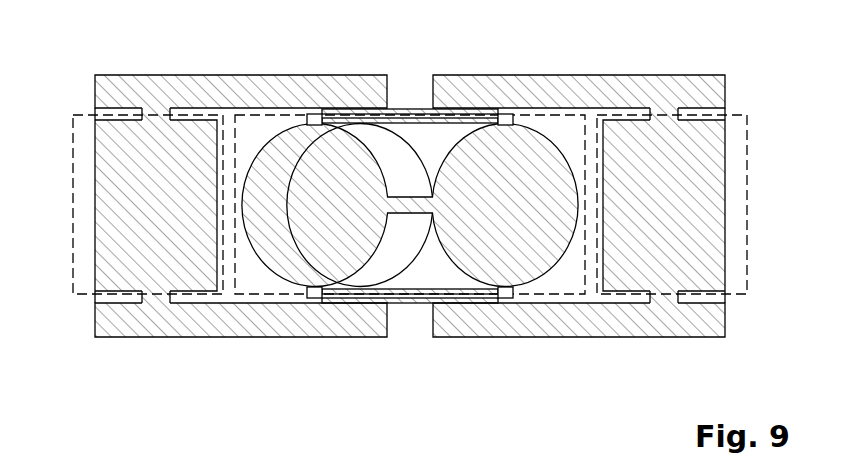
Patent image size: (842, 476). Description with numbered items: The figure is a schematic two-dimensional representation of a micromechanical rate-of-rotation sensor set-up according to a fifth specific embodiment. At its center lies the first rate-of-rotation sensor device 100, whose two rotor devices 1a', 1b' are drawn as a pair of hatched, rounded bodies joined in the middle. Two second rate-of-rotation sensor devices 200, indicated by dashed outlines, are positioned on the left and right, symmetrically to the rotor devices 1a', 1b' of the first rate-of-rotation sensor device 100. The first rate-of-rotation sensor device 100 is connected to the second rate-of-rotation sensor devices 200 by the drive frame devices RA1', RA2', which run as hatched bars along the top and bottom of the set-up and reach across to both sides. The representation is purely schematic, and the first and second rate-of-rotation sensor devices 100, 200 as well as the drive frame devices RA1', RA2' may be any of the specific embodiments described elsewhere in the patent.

The drive frame device RA1' is at (410, 60).
The drive frame device RA2' is at (410, 353).
The second rate-of-rotation sensor device 200 is at (71, 209).
The rotor device 1a' is at (410, 205).
The rotor device 1b' is at (374, 205).
The first rate-of-rotation sensor device 100 is at (409, 304).